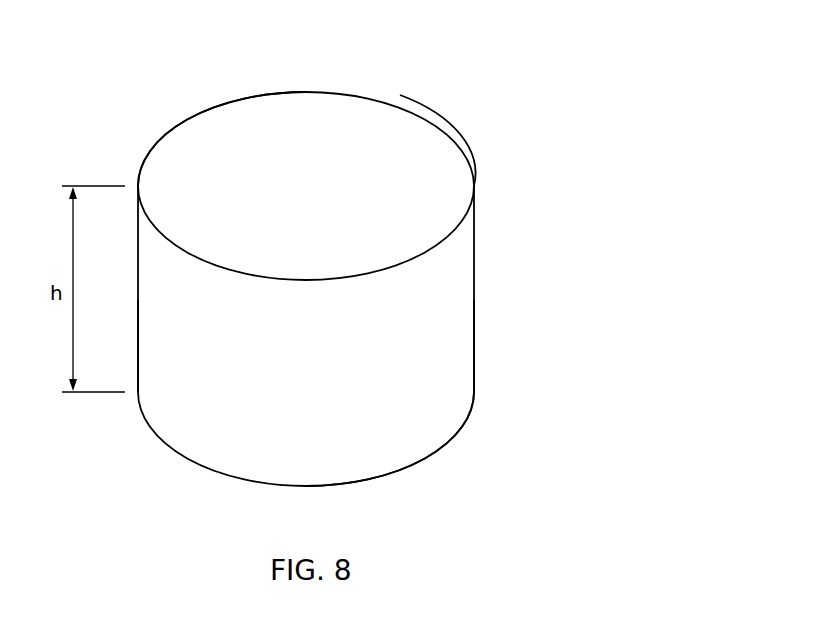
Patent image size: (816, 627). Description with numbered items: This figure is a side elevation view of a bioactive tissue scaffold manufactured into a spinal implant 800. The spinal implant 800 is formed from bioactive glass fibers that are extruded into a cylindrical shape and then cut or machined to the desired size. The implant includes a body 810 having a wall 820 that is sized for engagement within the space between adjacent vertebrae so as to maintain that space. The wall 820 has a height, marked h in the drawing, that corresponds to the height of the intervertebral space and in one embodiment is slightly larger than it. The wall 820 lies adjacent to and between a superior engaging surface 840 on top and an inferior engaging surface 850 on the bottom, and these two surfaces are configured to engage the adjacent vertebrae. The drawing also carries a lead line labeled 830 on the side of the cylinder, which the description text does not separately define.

The spinal implant 800 is at (537, 77).
The body 810 is at (477, 180).
The wall 820 is at (448, 318).
The side wall 830 is at (170, 347).
The superior engaging surface 840 is at (210, 133).
The inferior engaging surface 850 is at (400, 485).